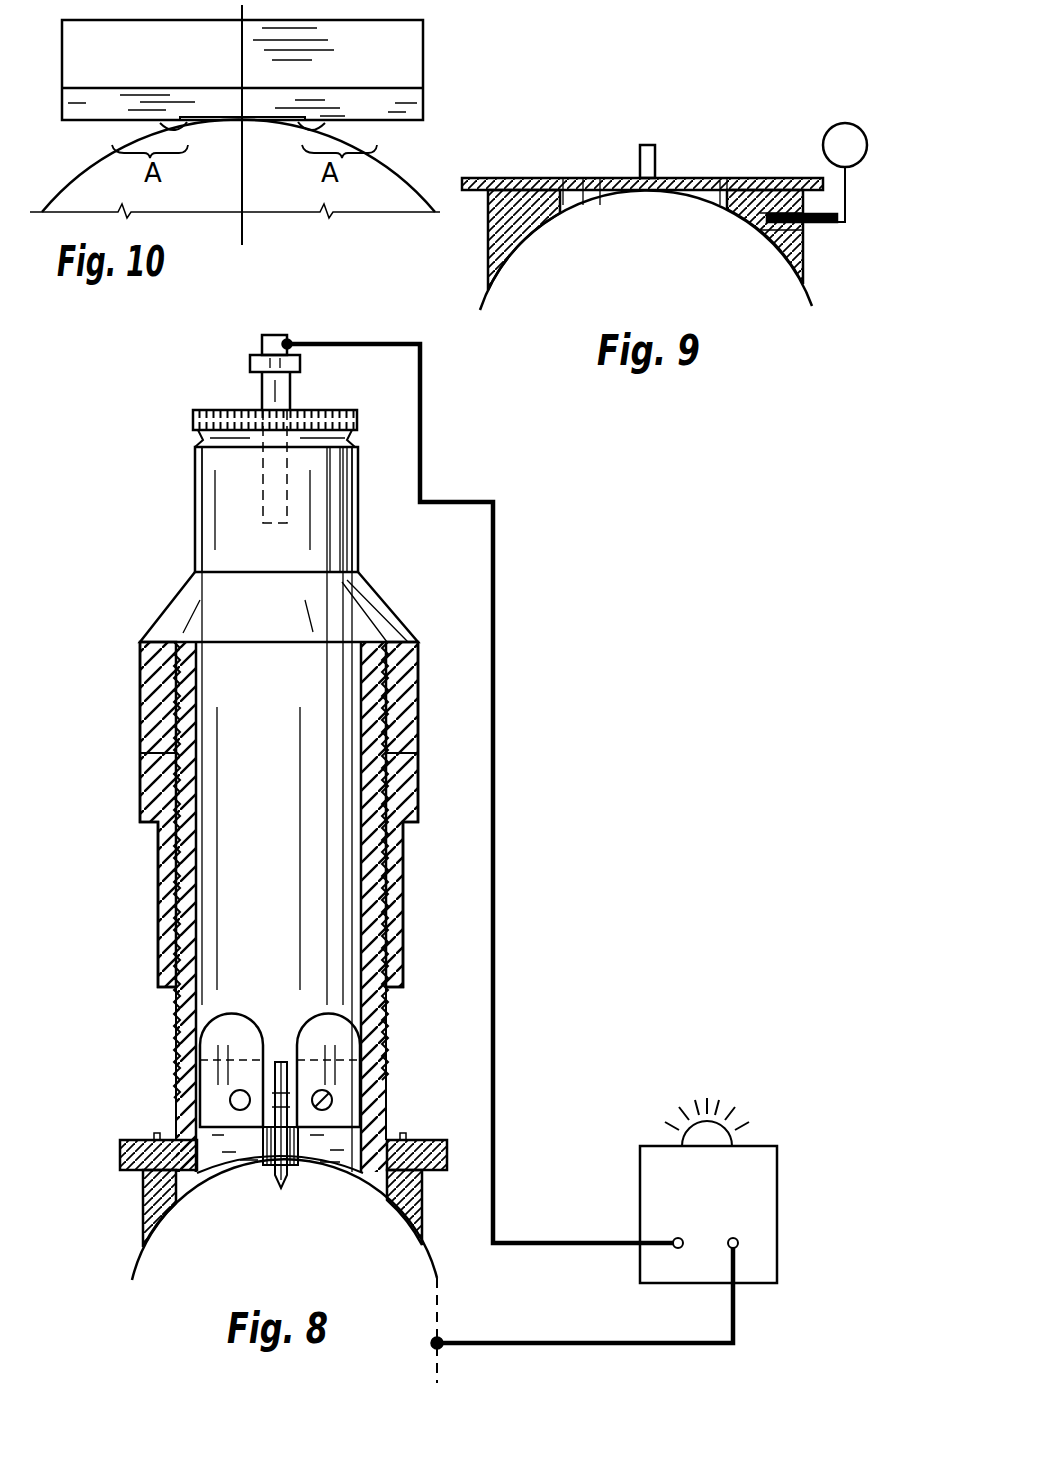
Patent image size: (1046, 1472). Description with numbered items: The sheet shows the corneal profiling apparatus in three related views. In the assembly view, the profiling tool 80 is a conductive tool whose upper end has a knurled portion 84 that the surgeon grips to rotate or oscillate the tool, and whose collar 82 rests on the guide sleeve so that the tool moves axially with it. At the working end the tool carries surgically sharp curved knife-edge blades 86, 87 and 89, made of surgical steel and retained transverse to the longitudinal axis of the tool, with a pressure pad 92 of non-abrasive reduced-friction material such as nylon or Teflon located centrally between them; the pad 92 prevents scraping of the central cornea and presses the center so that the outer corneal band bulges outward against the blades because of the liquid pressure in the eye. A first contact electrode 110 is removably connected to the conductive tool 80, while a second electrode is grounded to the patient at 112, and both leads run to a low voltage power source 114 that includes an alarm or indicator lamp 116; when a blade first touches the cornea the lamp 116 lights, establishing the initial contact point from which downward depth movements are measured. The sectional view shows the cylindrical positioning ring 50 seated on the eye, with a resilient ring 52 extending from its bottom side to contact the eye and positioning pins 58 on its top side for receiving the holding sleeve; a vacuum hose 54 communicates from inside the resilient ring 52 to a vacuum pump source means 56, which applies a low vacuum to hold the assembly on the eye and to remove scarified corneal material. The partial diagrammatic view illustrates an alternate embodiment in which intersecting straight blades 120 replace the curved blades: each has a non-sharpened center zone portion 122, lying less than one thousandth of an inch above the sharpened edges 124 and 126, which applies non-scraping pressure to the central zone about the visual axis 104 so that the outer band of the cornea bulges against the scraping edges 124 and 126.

In FIG. 9, the cylindrical positioning ring 50 is at (785, 180).
In FIG. 9, the resilient ring 52 is at (528, 188).
In FIG. 9, the vacuum hose 54 is at (847, 198).
In FIG. 9, the vacuum pump source means 56 is at (843, 122).
In FIG. 9, the positioning pins 58 is at (649, 145).
In FIG. 8, the profiling tool 80 is at (190, 690).
In FIG. 8, the collar 82 is at (143, 650).
In FIG. 8, the knurled portion 84 is at (193, 422).
In FIG. 8, the curved knife-edge blade 86 is at (340, 1147).
In FIG. 8, the curved knife-edge blade 87 is at (212, 1147).
In FIG. 8, the curved knife-edge blade 89 is at (288, 1178).
In FIG. 8, the pressure pad 92 is at (273, 1160).
In FIG. 10, the visual axis 104 is at (241, 158).
In FIG. 8, the first contact electrode 110 is at (265, 392).
In FIG. 8, the ground connection 112 is at (440, 1290).
In FIG. 8, the low voltage power source 114 is at (760, 1207).
In FIG. 8, the indicator lamp 116 is at (725, 1115).
In FIG. 10, the intersecting straight blades 120 is at (417, 66).
In FIG. 10, the non-sharpened center zone portion 122 is at (207, 118).
In FIG. 10, the sharpened edge 124 is at (98, 118).
In FIG. 10, the sharpened edge 126 is at (374, 118).